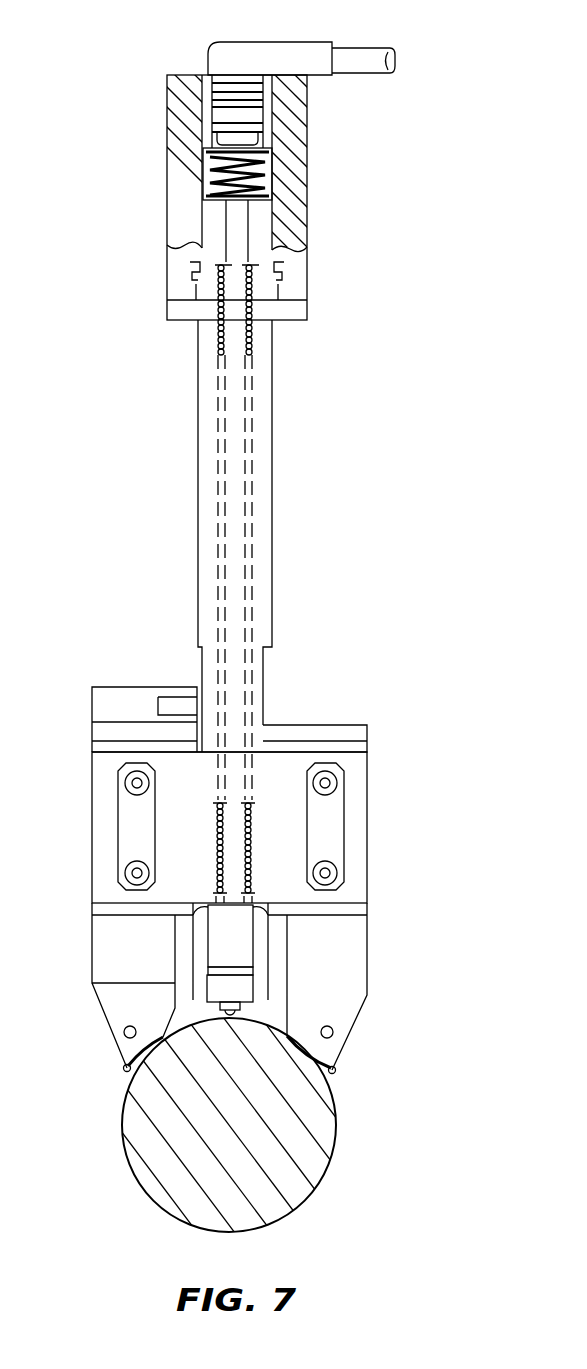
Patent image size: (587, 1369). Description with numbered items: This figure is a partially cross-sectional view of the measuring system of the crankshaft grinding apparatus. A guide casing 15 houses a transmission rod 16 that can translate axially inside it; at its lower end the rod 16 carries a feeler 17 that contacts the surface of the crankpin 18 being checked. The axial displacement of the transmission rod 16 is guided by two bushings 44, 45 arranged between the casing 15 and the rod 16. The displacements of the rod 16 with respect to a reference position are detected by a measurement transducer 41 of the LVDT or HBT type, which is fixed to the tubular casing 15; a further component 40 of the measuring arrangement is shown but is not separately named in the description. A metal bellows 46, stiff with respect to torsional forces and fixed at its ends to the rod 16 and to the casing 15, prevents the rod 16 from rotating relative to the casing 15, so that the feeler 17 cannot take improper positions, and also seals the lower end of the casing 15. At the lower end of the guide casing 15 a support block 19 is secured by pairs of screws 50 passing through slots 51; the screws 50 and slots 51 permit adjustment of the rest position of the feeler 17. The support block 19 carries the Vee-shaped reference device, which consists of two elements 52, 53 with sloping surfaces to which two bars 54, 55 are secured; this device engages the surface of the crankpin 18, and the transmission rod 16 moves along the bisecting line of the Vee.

The transducer 41 is at (201, 51).
The transmission rod 16 is at (233, 232).
The bushing 44 is at (219, 337).
The guide casing 15 is at (205, 632).
The support block 19 is at (119, 671).
The bushing 45 is at (250, 800).
The slots 51 is at (145, 822).
The screws 50 is at (131, 864).
The element with sloping surface 52 is at (112, 940).
The element with sloping surface 53 is at (345, 933).
The metal bellows 46 is at (226, 946).
The sensor 40 is at (226, 990).
The feeler 17 is at (236, 1013).
The bar 54 is at (123, 1068).
The bar 55 is at (336, 1070).
The crankpin 18 is at (205, 1137).